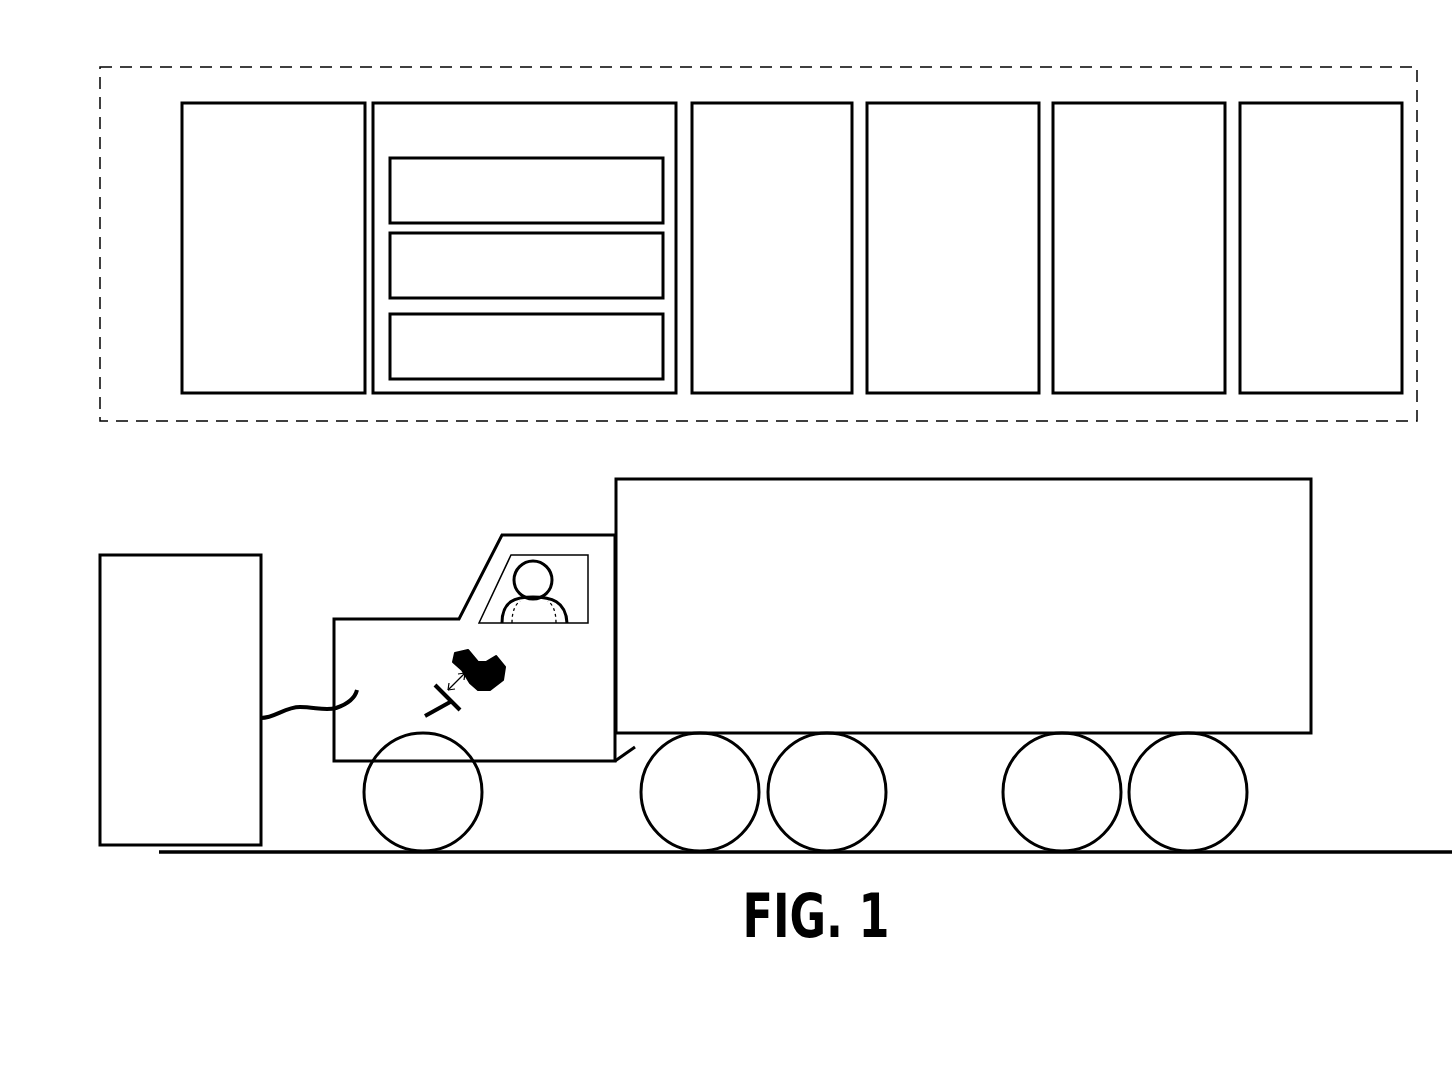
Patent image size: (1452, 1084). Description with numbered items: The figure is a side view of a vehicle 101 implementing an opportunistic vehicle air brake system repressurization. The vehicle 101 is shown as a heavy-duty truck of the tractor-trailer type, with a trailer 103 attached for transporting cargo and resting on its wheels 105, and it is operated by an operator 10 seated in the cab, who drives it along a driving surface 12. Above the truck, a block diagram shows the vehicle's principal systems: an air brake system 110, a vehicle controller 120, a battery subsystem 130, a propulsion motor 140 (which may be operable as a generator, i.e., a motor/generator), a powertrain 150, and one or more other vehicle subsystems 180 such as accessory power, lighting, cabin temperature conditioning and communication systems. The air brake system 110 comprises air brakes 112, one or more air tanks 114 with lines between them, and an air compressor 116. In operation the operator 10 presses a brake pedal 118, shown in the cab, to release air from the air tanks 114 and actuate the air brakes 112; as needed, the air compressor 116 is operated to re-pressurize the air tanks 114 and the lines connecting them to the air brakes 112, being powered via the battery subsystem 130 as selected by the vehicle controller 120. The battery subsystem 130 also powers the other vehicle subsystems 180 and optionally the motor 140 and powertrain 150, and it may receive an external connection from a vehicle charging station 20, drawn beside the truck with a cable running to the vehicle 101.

The operator 10 is at (508, 598).
The driving surface 12 is at (1428, 808).
The vehicle charging station 20 is at (228, 700).
The vehicle 101 is at (546, 421).
The trailer 103 is at (963, 606).
The wheels 105 is at (805, 792).
The air brake system 110 is at (524, 248).
The air brakes 112 is at (526, 190).
The air tanks 114 is at (526, 265).
The air compressor 116 is at (526, 346).
The brake pedal 118 is at (433, 703).
The vehicle controller 120 is at (772, 248).
The battery subsystem 130 is at (953, 248).
The propulsion motor 140 is at (1139, 248).
The powertrain 150 is at (1321, 248).
The other vehicle subsystems 180 is at (273, 248).